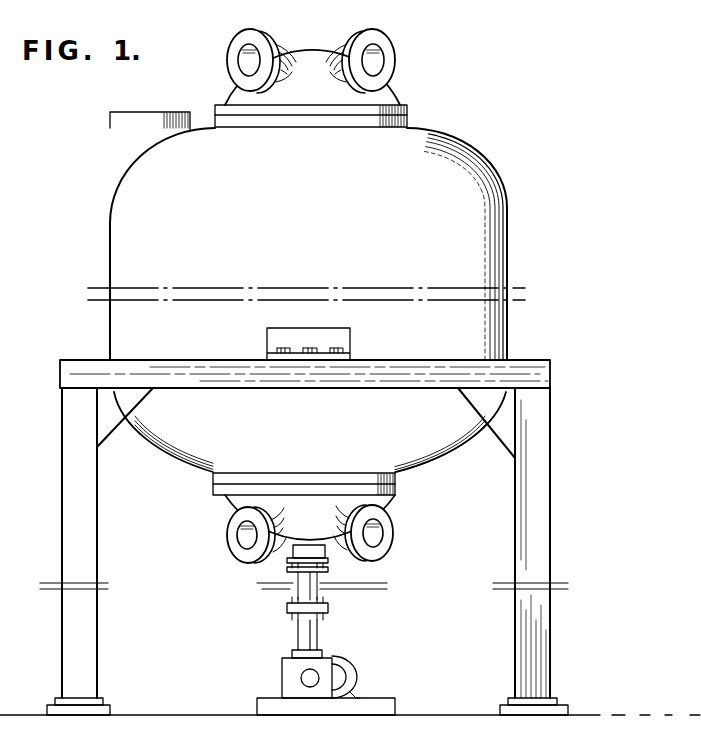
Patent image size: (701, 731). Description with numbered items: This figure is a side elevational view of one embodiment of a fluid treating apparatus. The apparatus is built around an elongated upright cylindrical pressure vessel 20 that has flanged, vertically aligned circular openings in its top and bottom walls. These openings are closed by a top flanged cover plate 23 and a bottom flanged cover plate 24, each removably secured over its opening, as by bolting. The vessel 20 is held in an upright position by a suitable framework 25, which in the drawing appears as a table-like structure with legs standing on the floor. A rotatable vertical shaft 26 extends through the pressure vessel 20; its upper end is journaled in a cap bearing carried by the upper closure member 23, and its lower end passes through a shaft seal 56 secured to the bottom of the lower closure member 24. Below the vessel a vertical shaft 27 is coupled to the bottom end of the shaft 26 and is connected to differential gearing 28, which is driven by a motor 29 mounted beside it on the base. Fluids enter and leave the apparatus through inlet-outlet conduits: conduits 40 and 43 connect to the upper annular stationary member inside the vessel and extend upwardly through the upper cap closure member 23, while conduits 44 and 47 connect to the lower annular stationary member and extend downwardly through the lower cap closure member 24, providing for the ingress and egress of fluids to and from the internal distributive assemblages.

The pressure vessel 20 is at (520, 246).
The top flanged cover plate 23 is at (315, 66).
The bottom flanged cover plate 24 is at (388, 500).
The framework 25 is at (563, 551).
The rotatable vertical shaft 26 is at (350, 584).
The vertical shaft 27 is at (334, 634).
The differential gearing 28 is at (270, 682).
The motor 29 is at (356, 680).
The inlet-outlet conduit 40 is at (276, 55).
The inlet-outlet conduit 43 is at (347, 55).
The inlet-outlet conduit 44 is at (236, 558).
The inlet-outlet conduit 47 is at (393, 548).
The shaft seal 56 is at (285, 556).